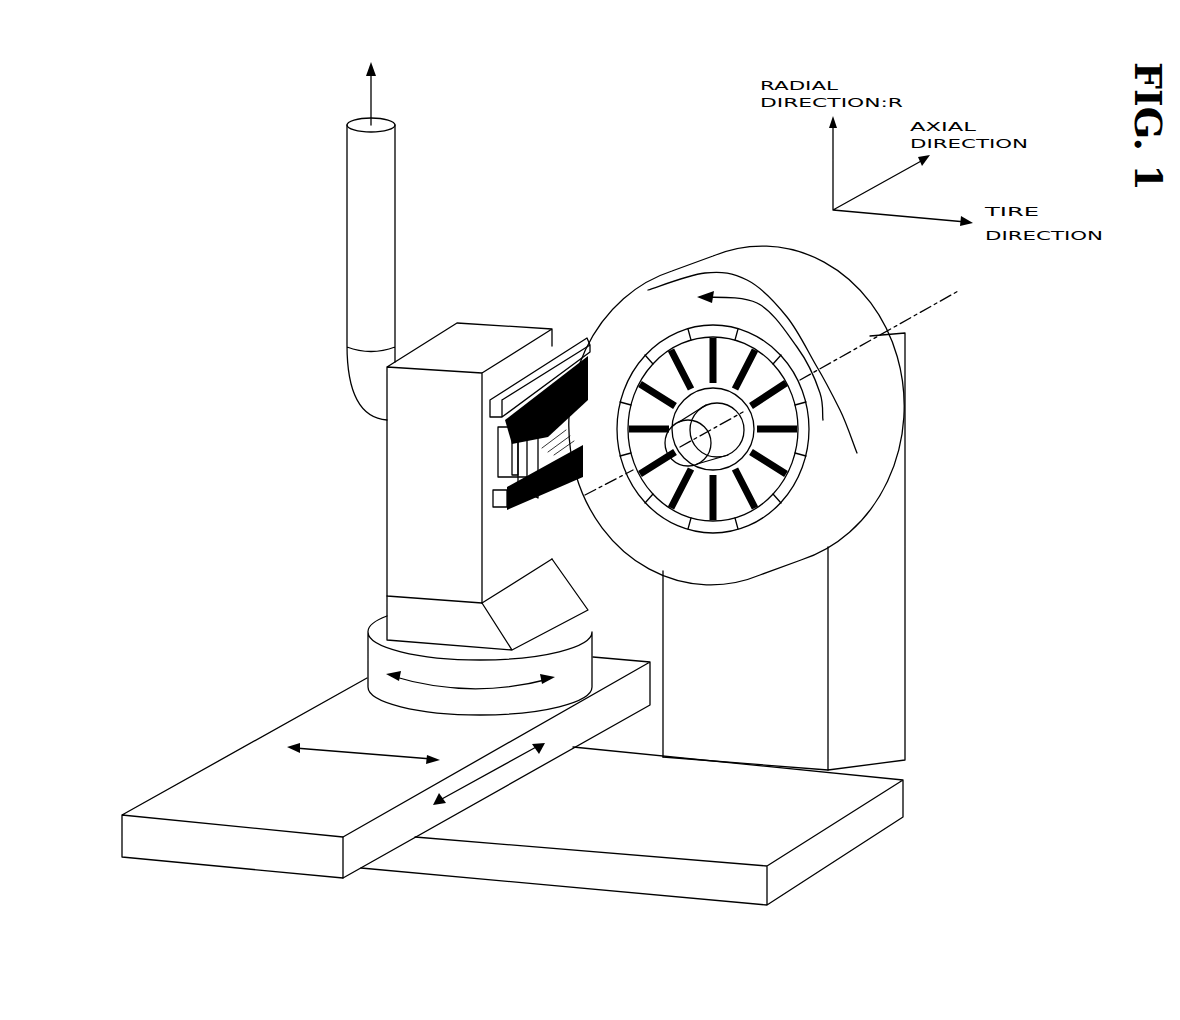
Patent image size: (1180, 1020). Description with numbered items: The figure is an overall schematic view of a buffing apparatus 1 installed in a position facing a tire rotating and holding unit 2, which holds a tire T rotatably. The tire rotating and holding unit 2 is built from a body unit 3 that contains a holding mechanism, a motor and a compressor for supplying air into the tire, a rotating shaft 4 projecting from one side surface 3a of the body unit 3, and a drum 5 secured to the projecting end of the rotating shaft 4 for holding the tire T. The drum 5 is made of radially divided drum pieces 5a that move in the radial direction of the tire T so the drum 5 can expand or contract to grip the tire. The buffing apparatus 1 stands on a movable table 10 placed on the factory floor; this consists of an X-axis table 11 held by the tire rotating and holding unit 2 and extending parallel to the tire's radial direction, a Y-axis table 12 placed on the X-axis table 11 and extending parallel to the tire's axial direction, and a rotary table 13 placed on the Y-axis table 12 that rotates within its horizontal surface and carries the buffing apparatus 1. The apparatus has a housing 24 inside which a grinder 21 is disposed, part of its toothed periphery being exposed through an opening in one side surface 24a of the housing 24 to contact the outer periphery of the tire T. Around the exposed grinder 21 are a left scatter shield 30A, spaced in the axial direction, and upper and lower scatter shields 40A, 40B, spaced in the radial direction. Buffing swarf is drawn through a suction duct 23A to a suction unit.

The buffing apparatus 1 is at (457, 323).
The tire rotating and holding unit 2 is at (920, 333).
The body unit 3 is at (907, 516).
The one side surface 3a is at (782, 645).
The rotating shaft 4 is at (687, 464).
The drum 5 is at (745, 468).
The drum pieces 5a is at (717, 530).
The movable table 10 is at (118, 812).
The X-axis table 11 is at (805, 820).
The Y-axis table 12 is at (332, 712).
The rotary table 13 is at (385, 620).
The grinder 21 is at (583, 350).
The suction duct 23A is at (365, 237).
The housing 24 is at (388, 490).
The one side surface 24a is at (535, 538).
The left scatter shield 30A is at (530, 453).
The upper scatter shield 40A is at (555, 365).
The lower scatter shield 40B is at (573, 490).
The tire T is at (758, 248).